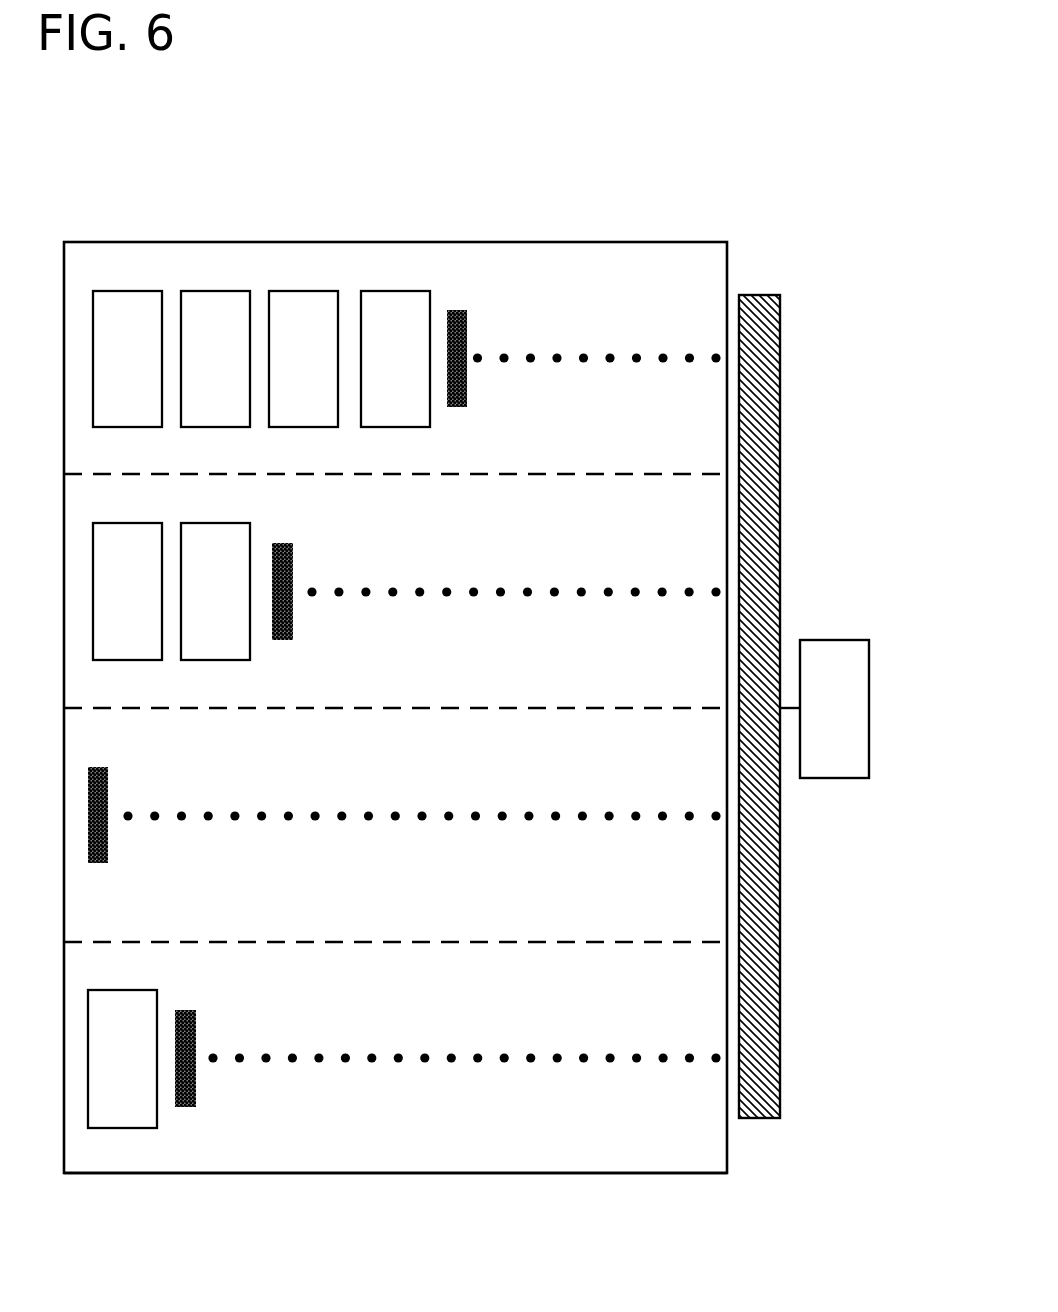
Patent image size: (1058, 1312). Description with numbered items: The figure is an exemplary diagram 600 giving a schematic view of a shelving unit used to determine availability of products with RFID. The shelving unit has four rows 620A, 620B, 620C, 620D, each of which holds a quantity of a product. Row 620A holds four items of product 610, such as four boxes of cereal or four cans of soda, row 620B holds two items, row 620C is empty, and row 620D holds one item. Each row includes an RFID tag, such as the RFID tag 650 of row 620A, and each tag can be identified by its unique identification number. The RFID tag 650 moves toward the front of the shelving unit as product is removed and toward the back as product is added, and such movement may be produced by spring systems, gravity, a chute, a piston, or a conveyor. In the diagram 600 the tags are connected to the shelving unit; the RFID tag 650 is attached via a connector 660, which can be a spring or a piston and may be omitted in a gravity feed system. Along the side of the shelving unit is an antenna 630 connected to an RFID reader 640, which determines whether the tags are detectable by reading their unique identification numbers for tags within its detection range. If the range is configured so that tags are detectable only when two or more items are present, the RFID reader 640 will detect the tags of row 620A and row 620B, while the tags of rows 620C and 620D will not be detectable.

The diagram 600 is at (777, 112).
The product 610 is at (150, 283).
The row 620A is at (395, 453).
The row 620B is at (395, 687).
The row 620C is at (395, 916).
The row 620D is at (395, 1153).
The antenna 630 is at (758, 293).
The RFID reader 640 is at (822, 639).
The RFID tag 650 is at (457, 303).
The connector 660 is at (592, 353).